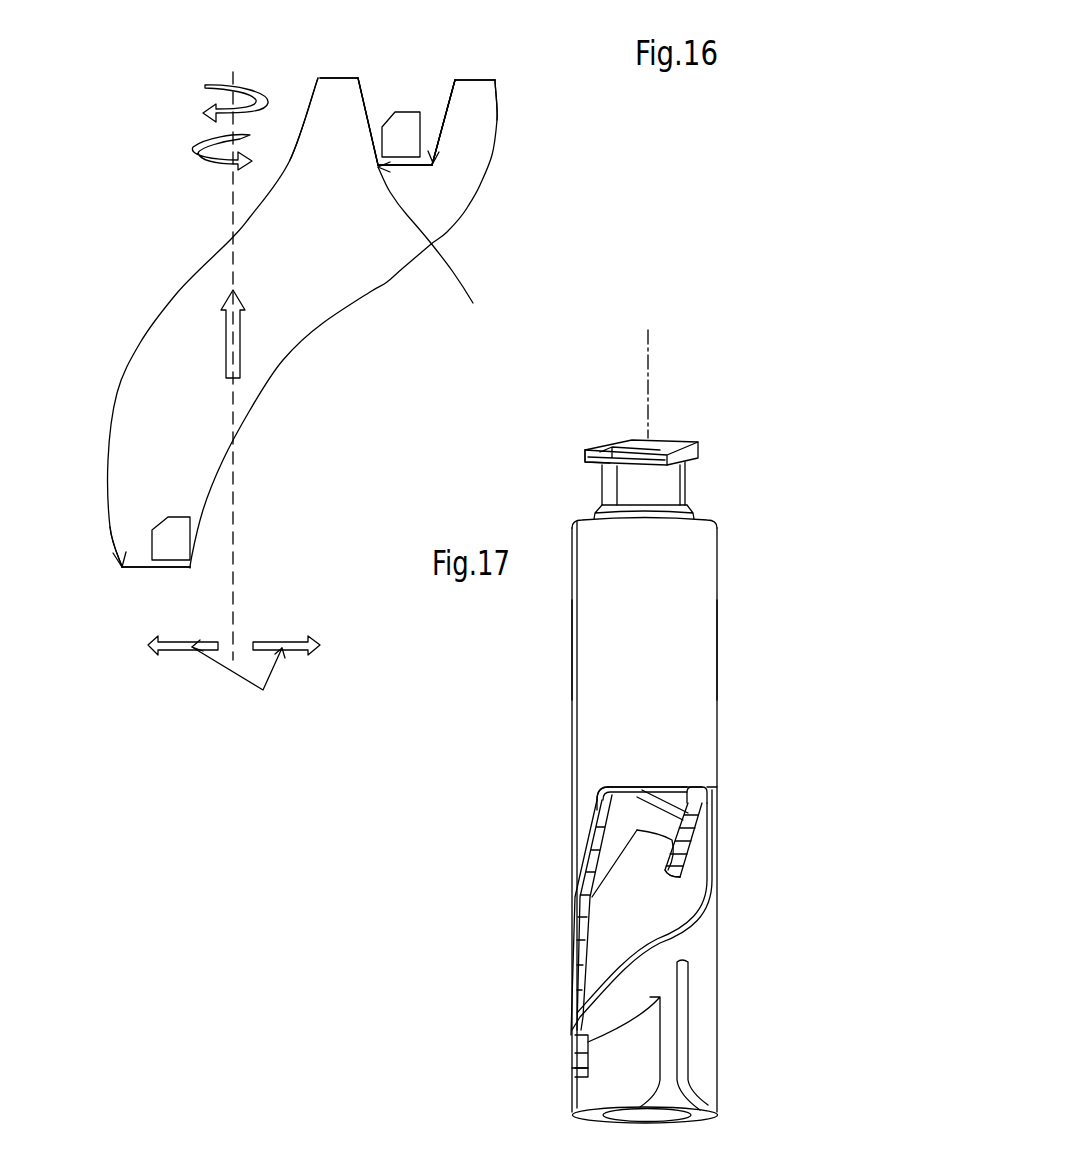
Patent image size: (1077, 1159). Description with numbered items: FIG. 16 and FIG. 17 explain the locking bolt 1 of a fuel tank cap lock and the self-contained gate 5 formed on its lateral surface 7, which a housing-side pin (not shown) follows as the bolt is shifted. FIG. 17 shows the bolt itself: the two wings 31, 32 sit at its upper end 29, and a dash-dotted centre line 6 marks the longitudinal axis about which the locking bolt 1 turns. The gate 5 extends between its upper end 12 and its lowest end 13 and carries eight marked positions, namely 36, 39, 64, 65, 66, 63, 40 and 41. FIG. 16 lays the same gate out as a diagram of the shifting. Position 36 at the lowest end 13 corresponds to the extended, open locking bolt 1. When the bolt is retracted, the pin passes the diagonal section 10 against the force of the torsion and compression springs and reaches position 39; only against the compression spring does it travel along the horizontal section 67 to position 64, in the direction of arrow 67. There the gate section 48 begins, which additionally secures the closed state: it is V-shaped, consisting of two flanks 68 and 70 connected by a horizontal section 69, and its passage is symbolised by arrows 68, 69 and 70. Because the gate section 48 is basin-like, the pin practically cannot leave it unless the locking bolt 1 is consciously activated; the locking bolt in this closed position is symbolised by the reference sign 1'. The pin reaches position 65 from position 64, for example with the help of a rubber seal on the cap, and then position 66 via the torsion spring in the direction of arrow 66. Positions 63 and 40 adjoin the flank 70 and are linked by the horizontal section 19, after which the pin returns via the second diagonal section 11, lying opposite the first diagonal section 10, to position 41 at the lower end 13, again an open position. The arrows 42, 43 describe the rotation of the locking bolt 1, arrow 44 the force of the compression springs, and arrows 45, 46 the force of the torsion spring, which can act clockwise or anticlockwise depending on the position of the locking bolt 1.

In FIG. 16, the locking bolt 1 is at (221, 522).
In FIG. 17, the locking bolt 1 is at (681, 822).
In FIG. 16, the locking bolt in the closed position 1' is at (428, 82).
In FIG. 17, the gate 5 is at (610, 862).
In FIG. 17, the longitudinal axis 6 is at (648, 350).
In FIG. 17, the lateral surface 7 is at (703, 643).
In FIG. 16, the diagonal section 10 is at (387, 282).
In FIG. 17, the diagonal section 10 is at (653, 972).
In FIG. 16, the second diagonal section 11 is at (177, 297).
In FIG. 17, the second diagonal section 11 is at (610, 850).
In FIG. 17, the upper end 12 is at (730, 788).
In FIG. 17, the lowest end 13 is at (573, 1072).
In FIG. 16, the horizontal section 19 is at (330, 82).
In FIG. 17, the horizontal section 19 is at (623, 790).
In FIG. 17, the upper end 29 is at (700, 548).
In FIG. 17, the wing 31 is at (690, 450).
In FIG. 17, the wing 32 is at (588, 455).
In FIG. 16, the lowest position 36 is at (190, 568).
In FIG. 17, the lowest position 36 is at (587, 1058).
In FIG. 16, the position at the upper end of the gate 39 is at (490, 93).
In FIG. 17, the position at the upper end of the gate 39 is at (643, 790).
In FIG. 16, the position 40 is at (318, 78).
In FIG. 17, the position 40 is at (600, 795).
In FIG. 16, the position 41 is at (120, 570).
In FIG. 17, the position 41 is at (578, 1043).
In FIG. 16, the arrow 42 is at (223, 88).
In FIG. 16, the arrow 43 is at (200, 157).
In FIG. 16, the arrow 44 is at (240, 328).
In FIG. 16, the arrow 45 is at (175, 647).
In FIG. 16, the arrow 46 is at (295, 647).
In FIG. 16, the gate section 48 is at (442, 135).
In FIG. 17, the gate section 48 is at (670, 858).
In FIG. 16, the position 63 is at (358, 78).
In FIG. 16, the position 64 is at (455, 80).
In FIG. 17, the position 64 is at (694, 792).
In FIG. 16, the position 65 is at (407, 167).
In FIG. 16, the position 66 is at (441, 241).
In FIG. 16, the horizontal section 67 is at (478, 80).
In FIG. 16, the flank 68 is at (447, 112).
In FIG. 17, the flank 68 is at (703, 790).
In FIG. 16, the horizontal section 69 is at (433, 167).
In FIG. 17, the horizontal section 69 is at (683, 875).
In FIG. 16, the flank 70 is at (372, 110).
In FIG. 17, the flank 70 is at (640, 805).